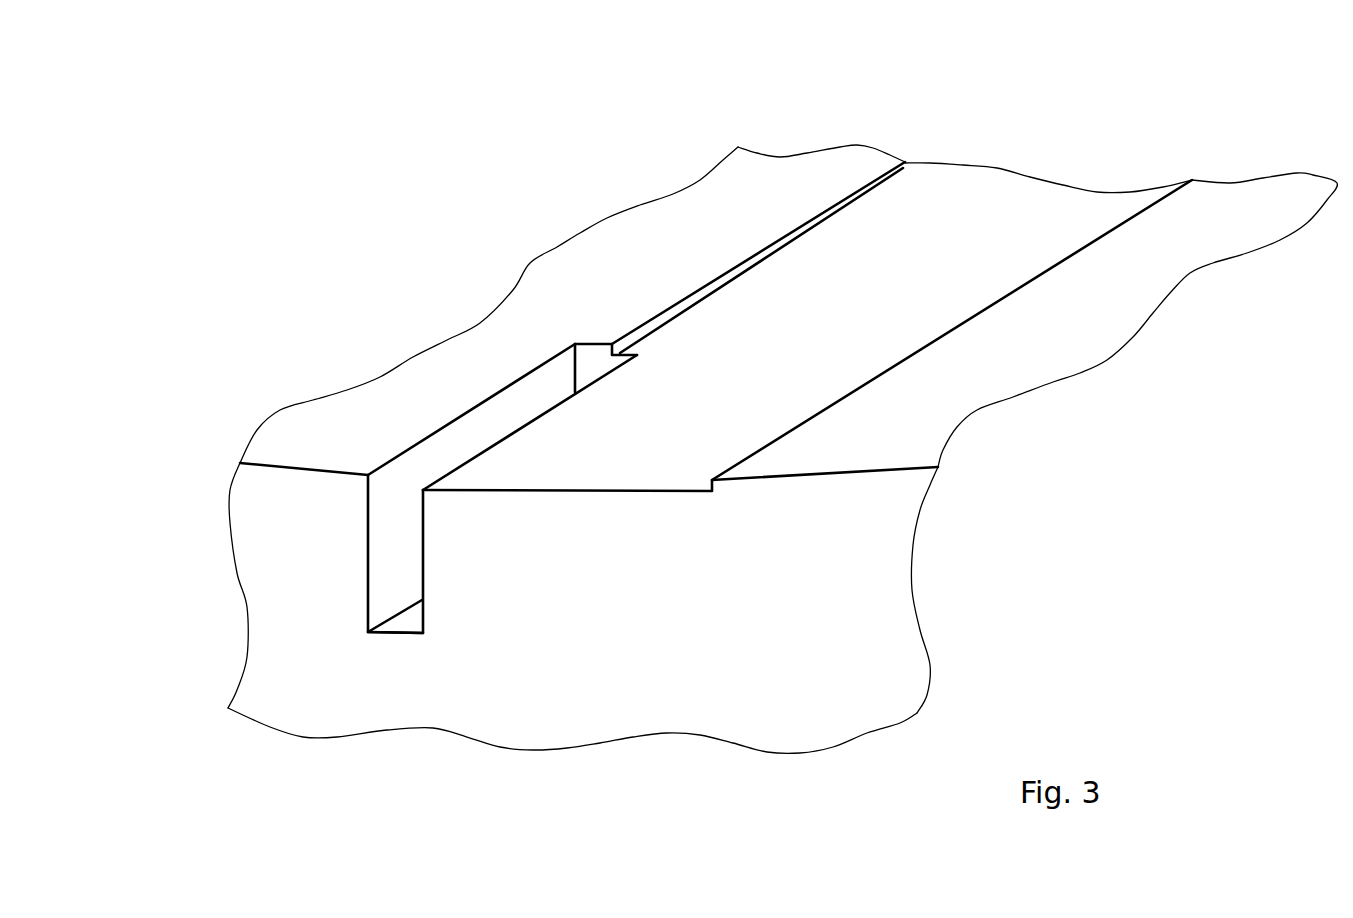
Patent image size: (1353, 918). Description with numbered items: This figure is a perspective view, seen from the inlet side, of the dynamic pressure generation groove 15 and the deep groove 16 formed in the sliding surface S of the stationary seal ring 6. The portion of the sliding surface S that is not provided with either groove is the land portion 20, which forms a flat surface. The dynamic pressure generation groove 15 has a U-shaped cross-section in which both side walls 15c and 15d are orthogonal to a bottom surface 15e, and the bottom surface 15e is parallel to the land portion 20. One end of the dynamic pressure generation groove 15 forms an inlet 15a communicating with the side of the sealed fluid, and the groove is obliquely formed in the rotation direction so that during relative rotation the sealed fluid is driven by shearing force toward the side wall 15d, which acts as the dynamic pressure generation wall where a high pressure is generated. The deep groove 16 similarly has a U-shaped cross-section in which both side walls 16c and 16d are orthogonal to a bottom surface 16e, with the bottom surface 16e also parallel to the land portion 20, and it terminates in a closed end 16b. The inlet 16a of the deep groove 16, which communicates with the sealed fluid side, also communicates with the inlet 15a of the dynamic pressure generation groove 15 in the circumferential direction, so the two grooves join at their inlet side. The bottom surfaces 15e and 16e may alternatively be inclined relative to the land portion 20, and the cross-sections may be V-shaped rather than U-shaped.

The stationary seal ring 6 is at (752, 676).
The dynamic pressure generation groove 15 is at (737, 340).
The dynamic pressure generation groove inlet 15a is at (533, 495).
The side wall 15c is at (803, 228).
The side wall (dynamic pressure generation wall) 15d is at (957, 320).
The bottom surface 15e is at (973, 217).
The deep groove 16 is at (502, 414).
The deep groove inlet 16a is at (393, 570).
The closed end 16b is at (572, 368).
The side wall 16c is at (450, 477).
The side wall 16d is at (400, 477).
The bottom surface 16e is at (407, 622).
The land portion 20 is at (1157, 267).
The sliding surface S is at (920, 409).